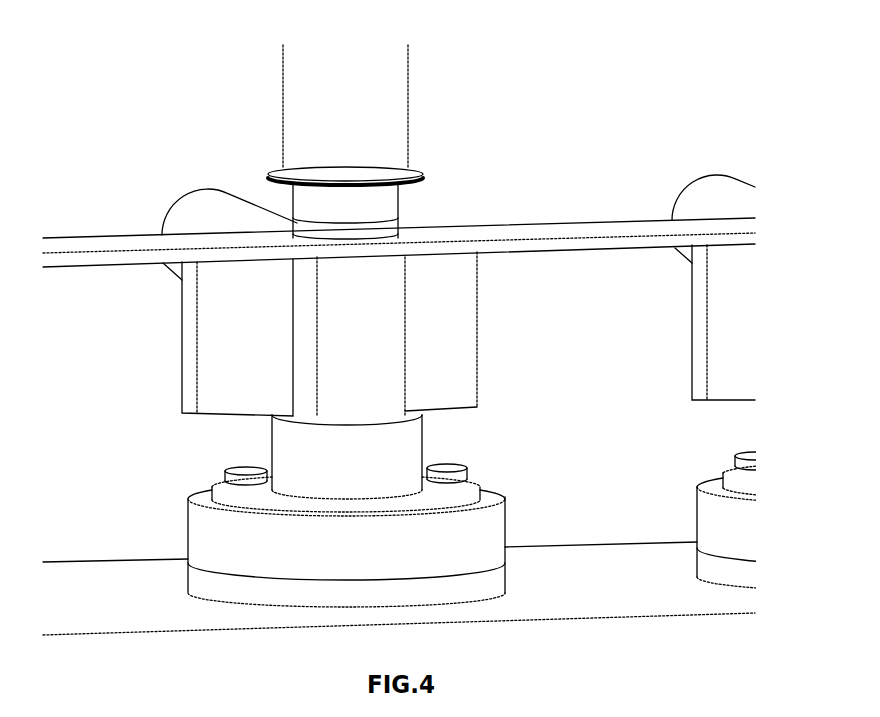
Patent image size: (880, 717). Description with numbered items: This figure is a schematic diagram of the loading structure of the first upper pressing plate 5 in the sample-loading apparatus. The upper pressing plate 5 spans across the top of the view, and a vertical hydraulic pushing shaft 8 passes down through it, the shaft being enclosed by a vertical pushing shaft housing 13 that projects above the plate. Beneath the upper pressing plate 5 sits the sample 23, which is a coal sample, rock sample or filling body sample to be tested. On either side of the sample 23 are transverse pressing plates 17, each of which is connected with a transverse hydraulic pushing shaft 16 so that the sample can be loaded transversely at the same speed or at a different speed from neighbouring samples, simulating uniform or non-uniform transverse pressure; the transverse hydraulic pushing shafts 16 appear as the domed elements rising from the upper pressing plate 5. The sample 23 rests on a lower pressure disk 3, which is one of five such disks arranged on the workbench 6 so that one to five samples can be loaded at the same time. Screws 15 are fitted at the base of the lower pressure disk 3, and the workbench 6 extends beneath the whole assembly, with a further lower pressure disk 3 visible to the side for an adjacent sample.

The lower pressure disk 3 is at (483, 553).
The upper pressing plate 5 is at (455, 233).
The workbench 6 is at (560, 573).
The vertical hydraulic pushing shaft 8 is at (375, 210).
The vertical pushing shaft housing 13 is at (370, 155).
The screw 15 is at (463, 463).
The transverse hydraulic pushing shaft 16 is at (207, 198).
The transverse pressing plate 17 is at (452, 402).
The sample 23 is at (372, 360).